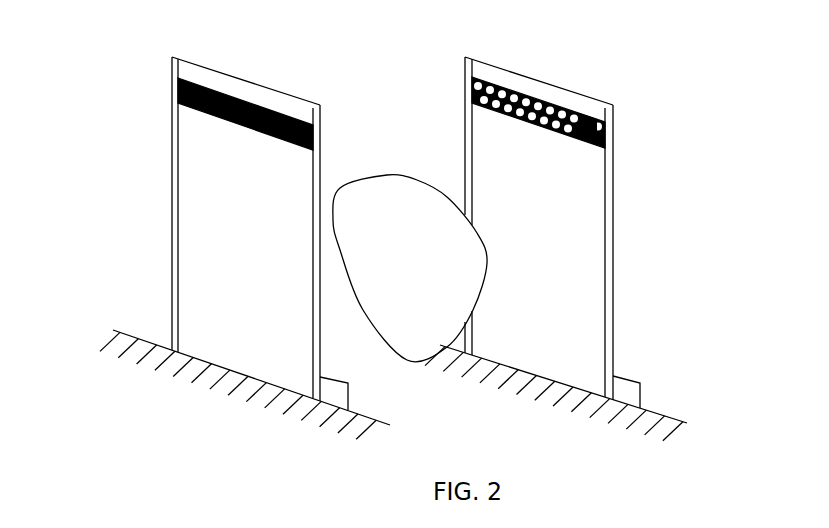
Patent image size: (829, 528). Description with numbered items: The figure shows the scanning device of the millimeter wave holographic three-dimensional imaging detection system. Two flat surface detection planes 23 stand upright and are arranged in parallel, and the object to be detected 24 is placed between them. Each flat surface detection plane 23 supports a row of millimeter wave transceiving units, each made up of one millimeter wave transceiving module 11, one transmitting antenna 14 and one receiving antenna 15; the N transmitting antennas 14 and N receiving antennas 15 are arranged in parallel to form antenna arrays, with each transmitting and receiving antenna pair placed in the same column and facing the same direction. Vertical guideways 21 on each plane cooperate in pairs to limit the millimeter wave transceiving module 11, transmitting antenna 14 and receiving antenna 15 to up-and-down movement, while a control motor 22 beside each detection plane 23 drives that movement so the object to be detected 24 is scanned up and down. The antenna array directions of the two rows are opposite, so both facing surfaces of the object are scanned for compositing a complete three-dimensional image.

The millimeter wave transceiving module 11 is at (180, 107).
The transmitting antenna 14 is at (590, 118).
The receiving antenna 15 is at (610, 137).
The vertical guideway 21 is at (173, 265).
The control motor 22 is at (628, 378).
The flat surface detection plane 23 is at (583, 213).
The object to be detected 24 is at (382, 168).